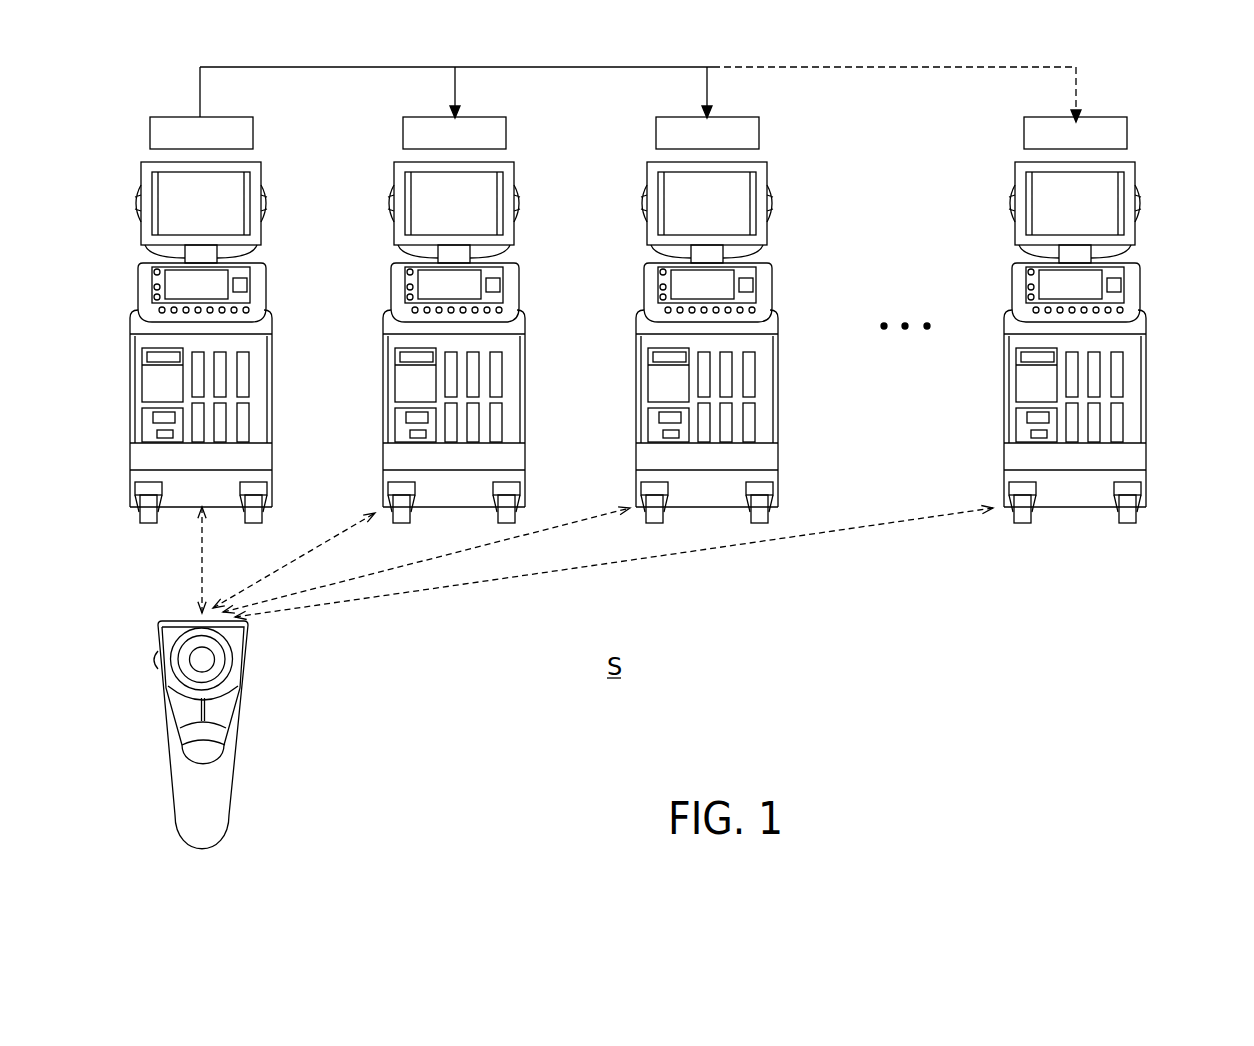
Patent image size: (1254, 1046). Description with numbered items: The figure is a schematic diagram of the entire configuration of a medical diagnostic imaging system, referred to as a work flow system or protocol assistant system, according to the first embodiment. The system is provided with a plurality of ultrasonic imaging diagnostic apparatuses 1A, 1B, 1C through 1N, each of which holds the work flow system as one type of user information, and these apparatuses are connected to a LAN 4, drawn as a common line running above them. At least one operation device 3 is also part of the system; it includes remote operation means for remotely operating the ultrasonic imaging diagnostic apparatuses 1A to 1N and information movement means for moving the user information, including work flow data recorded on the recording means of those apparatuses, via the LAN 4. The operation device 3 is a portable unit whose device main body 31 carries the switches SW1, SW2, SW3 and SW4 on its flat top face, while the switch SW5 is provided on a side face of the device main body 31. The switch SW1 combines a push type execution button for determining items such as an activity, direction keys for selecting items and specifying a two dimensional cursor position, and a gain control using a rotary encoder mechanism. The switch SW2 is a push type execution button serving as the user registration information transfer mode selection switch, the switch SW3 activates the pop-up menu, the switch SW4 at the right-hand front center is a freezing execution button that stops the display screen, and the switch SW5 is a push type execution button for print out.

The LAN 4 is at (615, 67).
The ultrasonic imaging diagnostic apparatus 1A is at (243, 320).
The ultrasonic imaging diagnostic apparatus 1B is at (496, 320).
The ultrasonic imaging diagnostic apparatus 1C is at (749, 320).
The ultrasonic imaging diagnostic apparatus 1N is at (1117, 320).
The operation device 3 is at (228, 735).
The device main body 31 is at (237, 807).
The switch SW1 is at (223, 657).
The switch SW2 is at (207, 755).
The switch SW3 is at (177, 708).
The switch SW4 is at (230, 708).
The switch SW5 is at (220, 738).